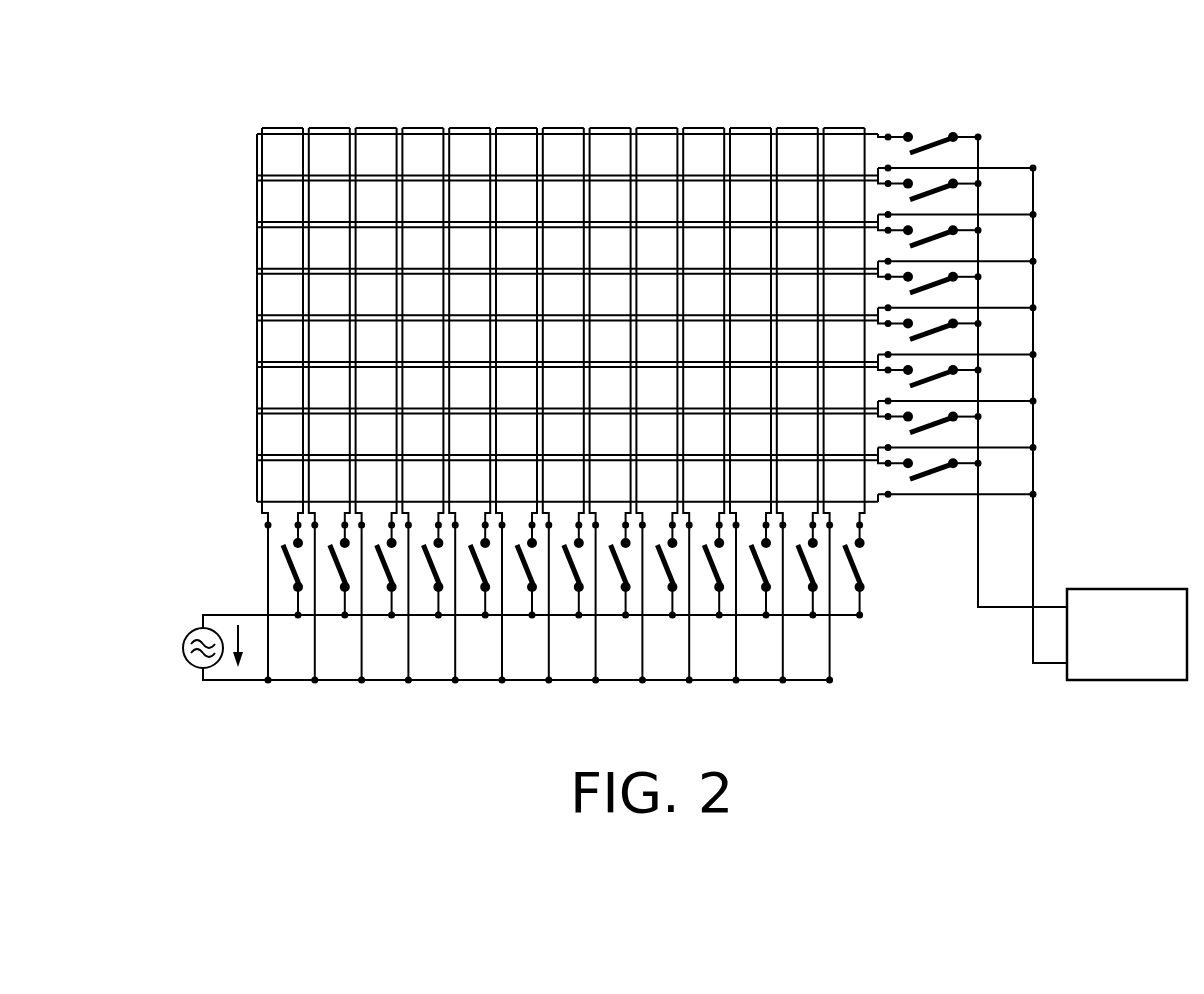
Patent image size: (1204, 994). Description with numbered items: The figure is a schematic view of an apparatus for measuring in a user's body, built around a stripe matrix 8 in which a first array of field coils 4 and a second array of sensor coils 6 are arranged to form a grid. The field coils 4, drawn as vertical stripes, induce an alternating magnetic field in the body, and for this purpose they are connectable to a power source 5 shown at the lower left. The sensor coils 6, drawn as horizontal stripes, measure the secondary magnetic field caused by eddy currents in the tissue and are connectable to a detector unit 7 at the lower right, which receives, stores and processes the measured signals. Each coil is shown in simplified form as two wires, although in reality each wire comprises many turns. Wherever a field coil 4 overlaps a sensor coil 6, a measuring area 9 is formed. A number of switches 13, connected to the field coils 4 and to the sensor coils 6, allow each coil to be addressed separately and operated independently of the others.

The field coils 4 is at (325, 127).
The sensor coils 6 is at (257, 196).
The measuring areas 9 is at (566, 142).
The stripe matrix 8 is at (619, 374).
The switches 13 is at (930, 135).
The detector unit 7 is at (1127, 589).
The power source 5 is at (183, 648).